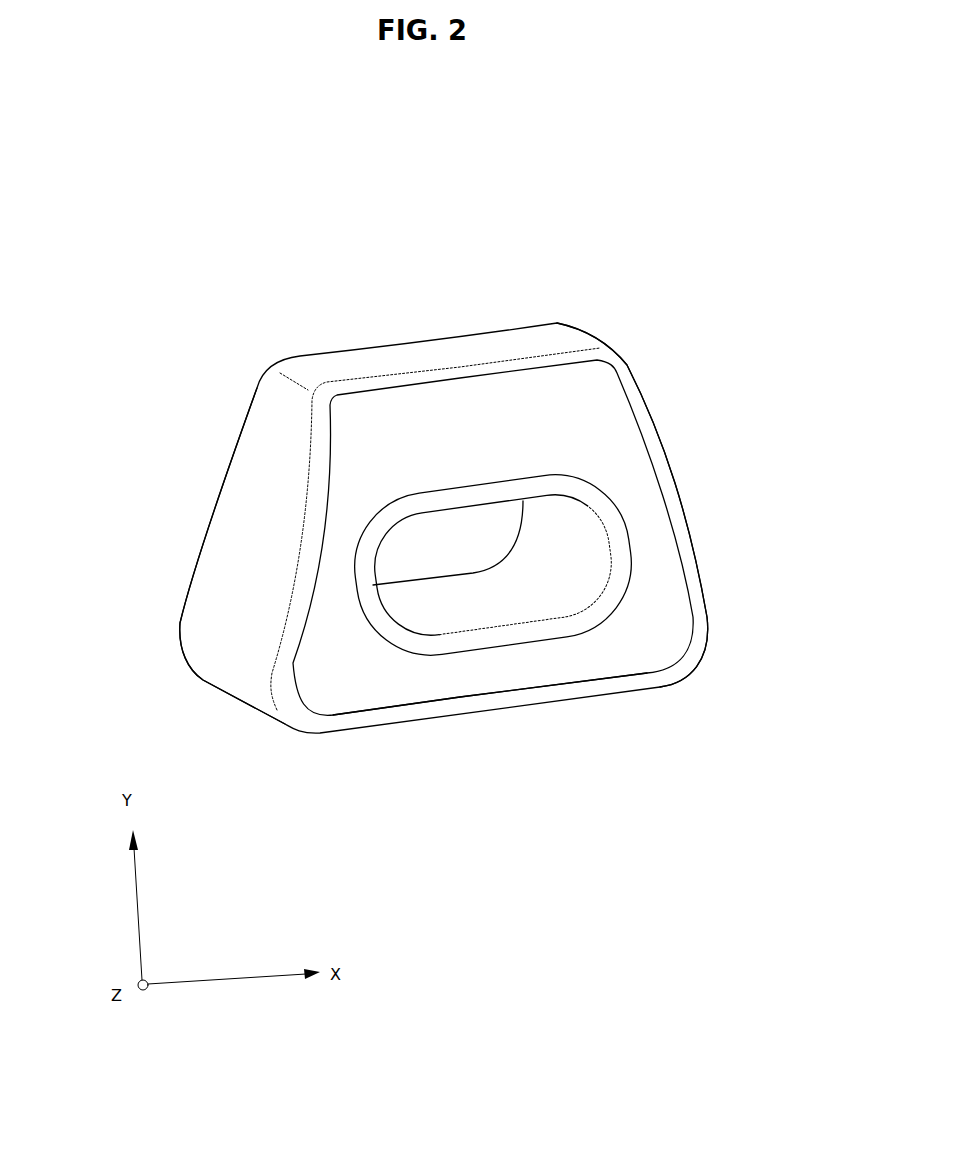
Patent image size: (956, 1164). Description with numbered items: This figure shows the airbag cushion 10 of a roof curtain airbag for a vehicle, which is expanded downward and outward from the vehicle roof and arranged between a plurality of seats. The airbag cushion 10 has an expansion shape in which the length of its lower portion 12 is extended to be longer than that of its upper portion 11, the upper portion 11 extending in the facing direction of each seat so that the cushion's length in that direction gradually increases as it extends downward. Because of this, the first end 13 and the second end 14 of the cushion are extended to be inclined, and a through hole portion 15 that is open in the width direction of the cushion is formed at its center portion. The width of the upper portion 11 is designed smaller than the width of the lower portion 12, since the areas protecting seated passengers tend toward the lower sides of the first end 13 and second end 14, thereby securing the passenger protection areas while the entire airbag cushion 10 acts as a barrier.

The airbag cushion 10 is at (337, 338).
The upper portion 11 is at (492, 400).
The lower portion 12 is at (438, 680).
The first end 13 is at (217, 537).
The second end 14 is at (678, 483).
The through hole portion 15 is at (492, 603).